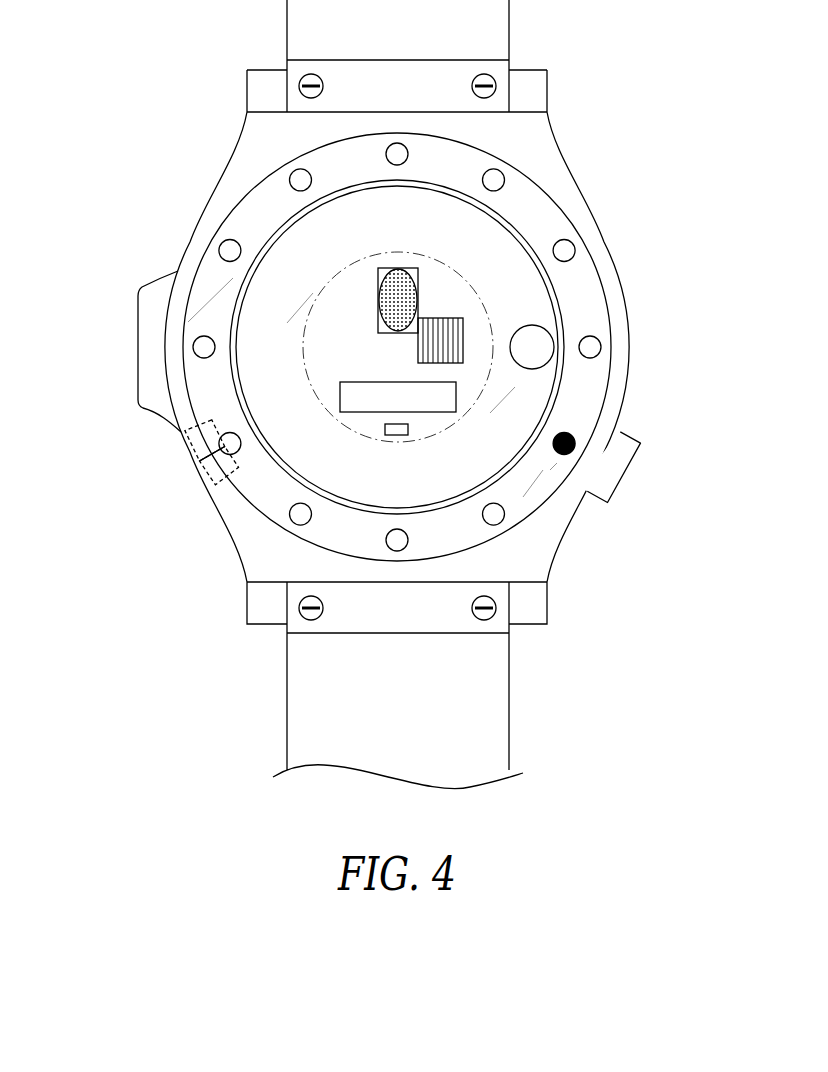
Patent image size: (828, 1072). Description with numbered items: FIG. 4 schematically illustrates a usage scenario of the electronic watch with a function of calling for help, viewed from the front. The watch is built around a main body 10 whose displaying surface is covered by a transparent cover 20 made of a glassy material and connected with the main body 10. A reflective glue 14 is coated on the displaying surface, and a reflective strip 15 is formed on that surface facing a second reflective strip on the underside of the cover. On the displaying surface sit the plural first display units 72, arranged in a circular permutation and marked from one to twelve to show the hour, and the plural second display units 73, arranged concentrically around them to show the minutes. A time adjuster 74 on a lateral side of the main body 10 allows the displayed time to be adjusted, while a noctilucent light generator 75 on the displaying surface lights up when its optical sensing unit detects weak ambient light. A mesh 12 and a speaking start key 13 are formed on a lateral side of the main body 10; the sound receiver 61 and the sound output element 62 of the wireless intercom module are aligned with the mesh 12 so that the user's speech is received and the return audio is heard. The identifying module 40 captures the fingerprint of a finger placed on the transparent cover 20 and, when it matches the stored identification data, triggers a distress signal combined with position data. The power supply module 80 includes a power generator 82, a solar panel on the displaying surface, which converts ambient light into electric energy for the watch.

The main body 10 is at (572, 533).
The mesh 12 is at (200, 463).
The speaking start key 13 is at (150, 338).
The reflective glue 14 is at (368, 437).
The reflective strip 15 is at (350, 396).
The transparent cover 20 is at (257, 295).
The identifying module 40 is at (373, 272).
The sound receiver 61 is at (183, 440).
The sound output element 62 is at (210, 493).
The first display unit 72 is at (409, 204).
The second display unit 73 is at (590, 347).
The time adjuster 74 is at (618, 460).
The noctilucent light generator 75 is at (400, 430).
The power supply module 80 is at (458, 312).
The power generator 82 is at (452, 330).